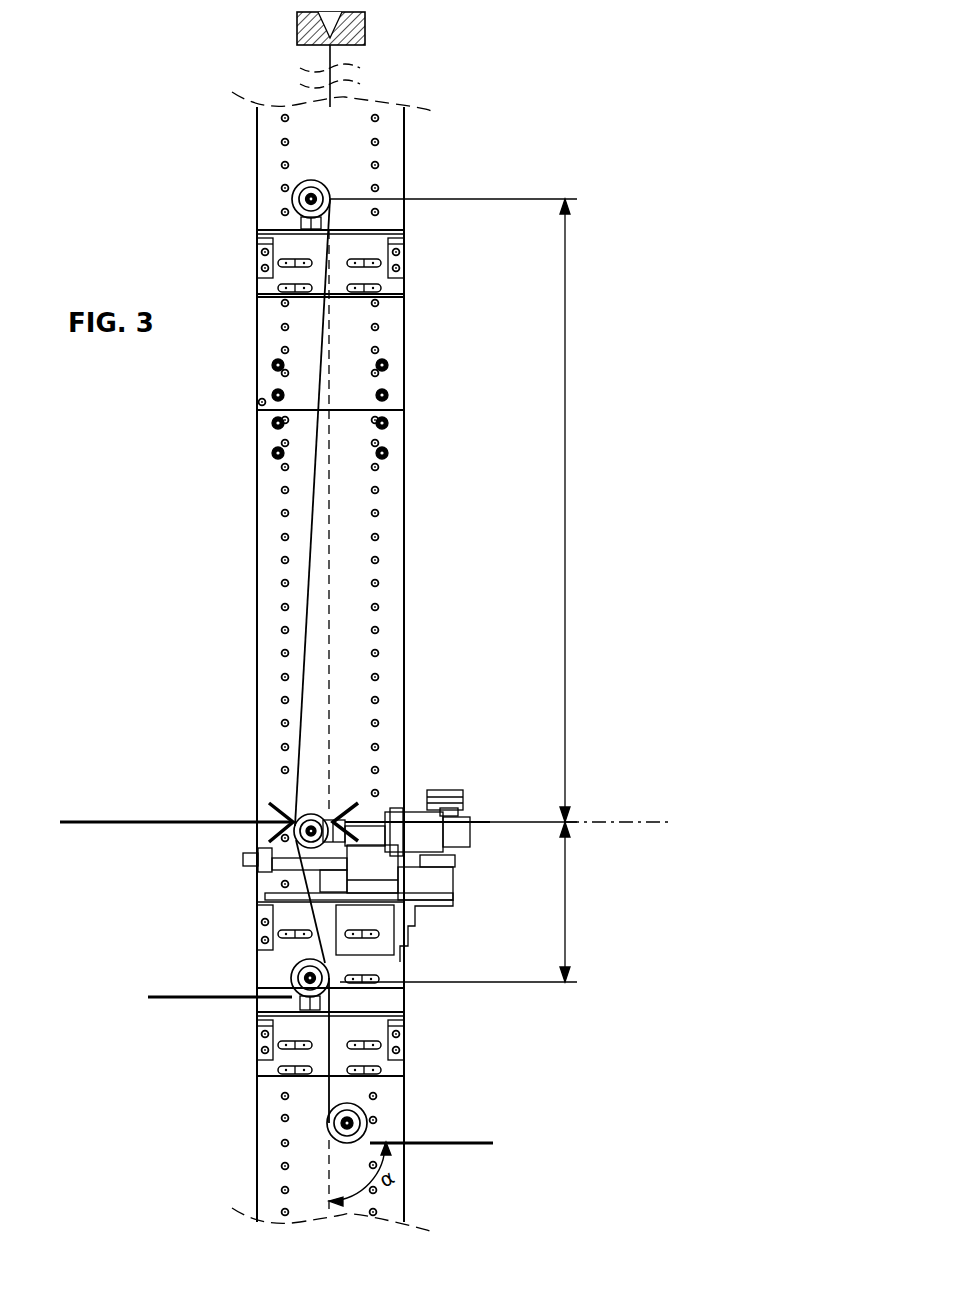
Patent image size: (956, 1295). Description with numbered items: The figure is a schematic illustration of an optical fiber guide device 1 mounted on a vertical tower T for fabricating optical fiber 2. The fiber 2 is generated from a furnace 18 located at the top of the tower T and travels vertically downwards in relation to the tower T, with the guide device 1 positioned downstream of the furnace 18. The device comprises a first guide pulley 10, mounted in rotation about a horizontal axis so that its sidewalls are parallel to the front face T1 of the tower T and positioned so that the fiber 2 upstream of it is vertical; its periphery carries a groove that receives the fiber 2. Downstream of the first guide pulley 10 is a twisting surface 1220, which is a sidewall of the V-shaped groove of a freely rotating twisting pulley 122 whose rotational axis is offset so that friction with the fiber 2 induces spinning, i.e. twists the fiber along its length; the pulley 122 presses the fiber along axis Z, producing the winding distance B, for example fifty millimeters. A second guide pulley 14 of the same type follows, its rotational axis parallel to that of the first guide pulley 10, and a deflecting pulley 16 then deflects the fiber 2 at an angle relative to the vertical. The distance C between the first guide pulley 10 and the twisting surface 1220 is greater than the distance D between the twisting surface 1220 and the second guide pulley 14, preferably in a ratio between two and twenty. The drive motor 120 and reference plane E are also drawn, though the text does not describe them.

The guide device 1 is at (152, 484).
The optical fiber 2 is at (333, 138).
The first guide pulley 10 is at (278, 199).
The second guide pulley 14 is at (280, 966).
The deflecting pulley 16 is at (378, 1104).
The furnace 18 is at (366, 26).
The drive motor 120 is at (449, 777).
The twisting pulley 122 is at (322, 804).
The twisting surface 1220 is at (288, 816).
The tower T is at (394, 334).
The front face of the tower T1 is at (364, 602).
The winding distance B is at (152, 822).
The reference plane E is at (300, 952).
The distance C is at (456, 510).
The distance D is at (461, 902).
The axis Z is at (610, 822).